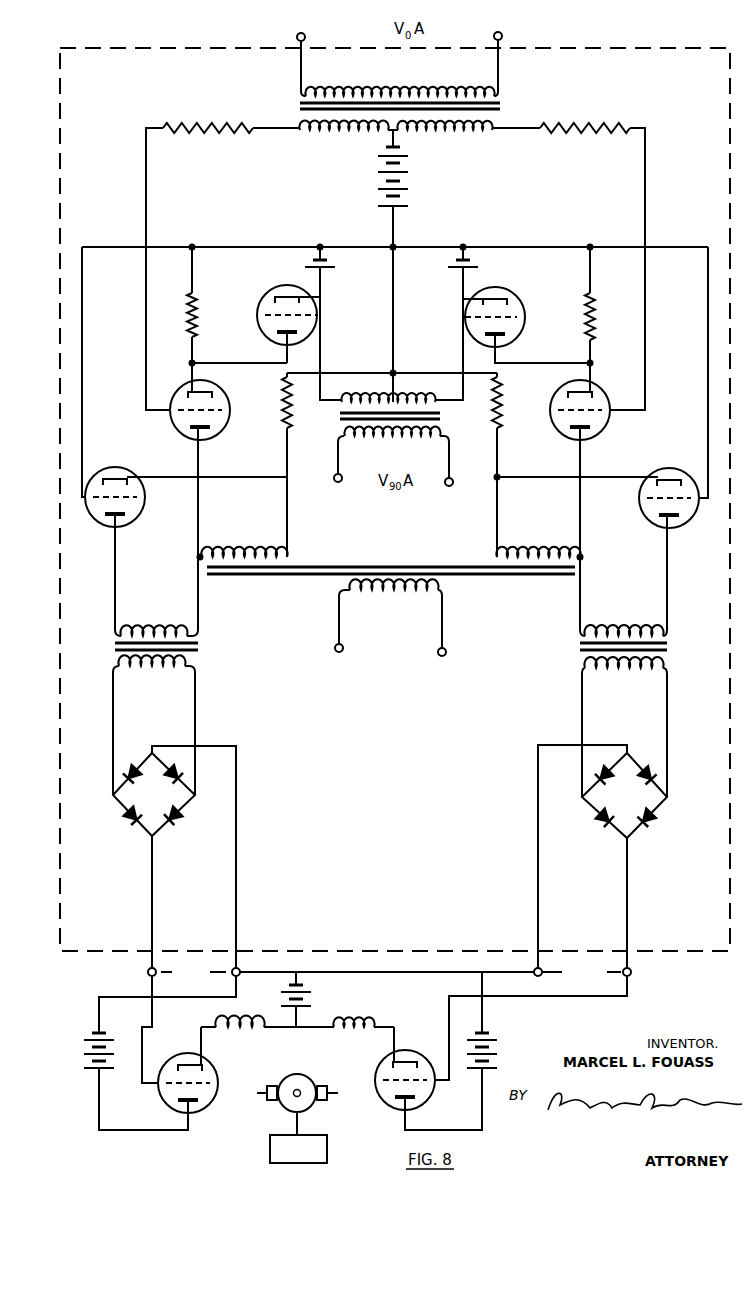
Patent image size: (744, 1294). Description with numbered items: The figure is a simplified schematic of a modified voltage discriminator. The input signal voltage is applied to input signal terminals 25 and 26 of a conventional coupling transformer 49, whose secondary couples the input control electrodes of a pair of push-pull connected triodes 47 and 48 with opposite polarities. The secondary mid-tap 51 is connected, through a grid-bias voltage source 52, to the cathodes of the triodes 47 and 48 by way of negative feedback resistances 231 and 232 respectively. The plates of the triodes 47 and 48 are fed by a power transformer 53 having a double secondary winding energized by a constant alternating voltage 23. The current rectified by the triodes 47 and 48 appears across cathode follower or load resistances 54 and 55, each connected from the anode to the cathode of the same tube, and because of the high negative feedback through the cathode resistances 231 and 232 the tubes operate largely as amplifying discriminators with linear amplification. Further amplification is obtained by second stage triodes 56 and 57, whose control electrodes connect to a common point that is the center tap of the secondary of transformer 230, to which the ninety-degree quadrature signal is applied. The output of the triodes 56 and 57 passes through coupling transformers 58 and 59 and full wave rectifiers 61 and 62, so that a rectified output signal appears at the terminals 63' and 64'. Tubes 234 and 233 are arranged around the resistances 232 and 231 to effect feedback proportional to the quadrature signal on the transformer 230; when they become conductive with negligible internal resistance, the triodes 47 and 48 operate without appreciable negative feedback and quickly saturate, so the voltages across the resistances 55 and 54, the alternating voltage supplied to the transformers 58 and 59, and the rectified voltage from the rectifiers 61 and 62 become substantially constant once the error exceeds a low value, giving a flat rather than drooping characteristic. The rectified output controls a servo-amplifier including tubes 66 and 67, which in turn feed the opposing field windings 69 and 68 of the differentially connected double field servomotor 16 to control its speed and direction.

The input signal terminal 26 is at (311, 57).
The input signal terminal 25 is at (508, 57).
The coupling transformer 49 is at (500, 106).
The secondary mid-tap 51 is at (386, 134).
The grid-bias voltage source 52 is at (404, 181).
The negative feedback resistance 232 is at (189, 302).
The tube 234 is at (272, 297).
The tube 233 is at (511, 297).
The negative feedback resistance 231 is at (596, 305).
The push-pull connected triode 48 is at (176, 420).
The cathode follower or load resistance 55 is at (280, 404).
The transformer 230 is at (338, 415).
The cathode follower or load resistance 54 is at (500, 407).
The push-pull connected triode 47 is at (605, 421).
The second stage triode 57 is at (98, 516).
The second stage triode 56 is at (694, 510).
The power transformer 53 is at (379, 559).
The constant alternating voltage 23 is at (390, 645).
The coupling transformer 59 is at (113, 648).
The coupling transformer 58 is at (669, 648).
The full wave rectifier 62 is at (118, 796).
The full wave rectifier 61 is at (652, 802).
The output terminals 64' is at (169, 1023).
The output terminals 63' is at (533, 1022).
The opposing field winding 69 is at (243, 1025).
The opposing field winding 68 is at (357, 1023).
The servomotor 16 is at (311, 1078).
The servo-amplifier tube 66 is at (204, 1110).
The amplidyne dynamo-electric amplifier 67 is at (381, 1103).